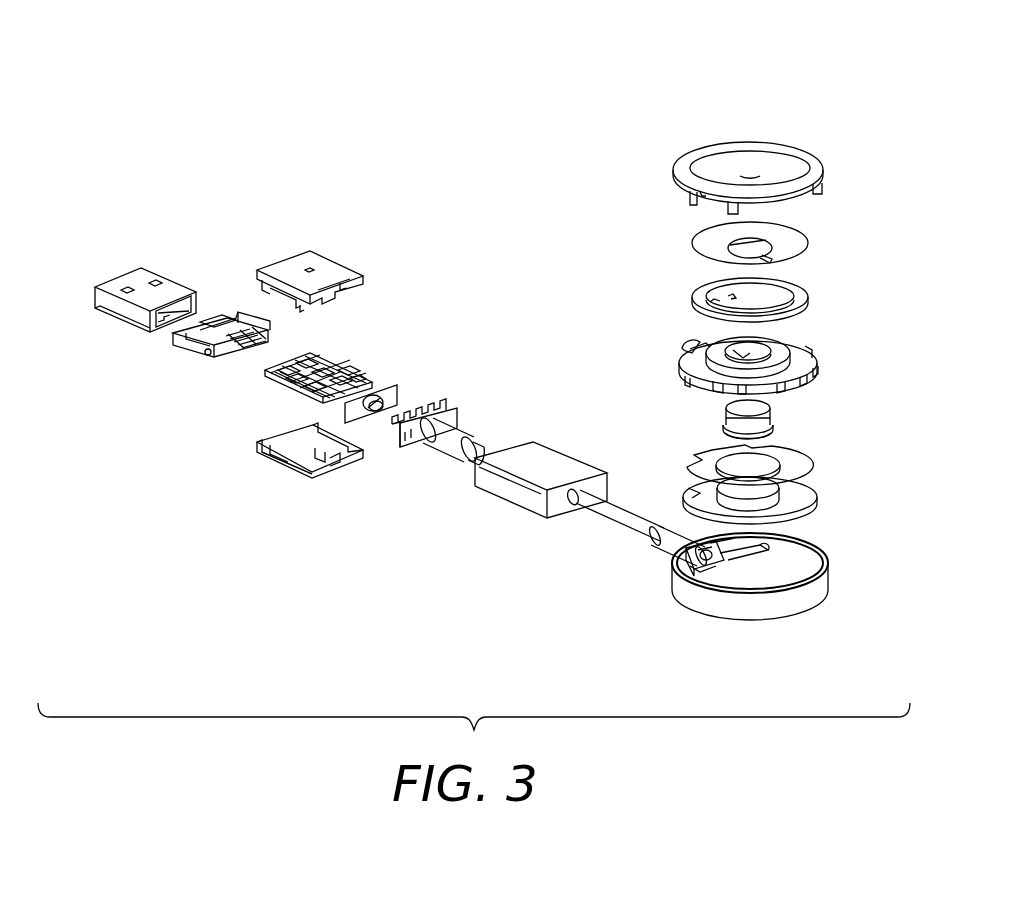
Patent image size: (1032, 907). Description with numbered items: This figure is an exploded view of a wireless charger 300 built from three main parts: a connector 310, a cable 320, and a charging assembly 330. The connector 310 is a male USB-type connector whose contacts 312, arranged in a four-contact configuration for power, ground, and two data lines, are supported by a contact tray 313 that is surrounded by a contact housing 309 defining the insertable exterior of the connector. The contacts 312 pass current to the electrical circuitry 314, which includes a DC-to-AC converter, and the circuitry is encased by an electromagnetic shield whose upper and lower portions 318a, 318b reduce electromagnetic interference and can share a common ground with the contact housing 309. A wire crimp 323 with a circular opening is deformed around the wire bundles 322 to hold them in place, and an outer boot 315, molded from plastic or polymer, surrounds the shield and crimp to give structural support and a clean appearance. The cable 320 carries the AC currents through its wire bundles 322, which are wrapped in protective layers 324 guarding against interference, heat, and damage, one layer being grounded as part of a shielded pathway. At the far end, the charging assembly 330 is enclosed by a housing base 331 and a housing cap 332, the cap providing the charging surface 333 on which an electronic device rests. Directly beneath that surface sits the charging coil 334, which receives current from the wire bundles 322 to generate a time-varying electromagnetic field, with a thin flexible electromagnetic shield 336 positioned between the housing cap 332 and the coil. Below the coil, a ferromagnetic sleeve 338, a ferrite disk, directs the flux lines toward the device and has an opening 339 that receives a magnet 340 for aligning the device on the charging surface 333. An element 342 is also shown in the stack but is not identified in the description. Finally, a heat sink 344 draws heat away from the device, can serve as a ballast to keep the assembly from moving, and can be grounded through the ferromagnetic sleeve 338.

The wireless charger 300 is at (476, 108).
The connector 310 is at (158, 194).
The contact housing 309 is at (106, 289).
The contacts 312 is at (170, 360).
The contact tray 313 is at (206, 358).
The electrical circuitry 314 is at (324, 346).
The upper portion of electromagnetic shield 318a is at (268, 258).
The lower portion of electromagnetic shield 318b is at (278, 464).
The cable 320 is at (574, 427).
The wire bundles 322 is at (432, 395).
The wire crimp 323 is at (396, 391).
The protective layers 324 is at (436, 449).
The outer boot 315 is at (516, 509).
The charging assembly 330 is at (698, 84).
The housing base 331 is at (820, 592).
The housing cap 332 is at (828, 172).
The charging surface 333 is at (770, 158).
The charging coil 334 is at (800, 300).
The electromagnetic shield 336 is at (795, 247).
The ferromagnetic sleeve 338 is at (800, 352).
The opening 339 is at (726, 351).
The magnet 340 is at (765, 420).
The plate 342 is at (793, 462).
The heat sink 344 is at (805, 515).